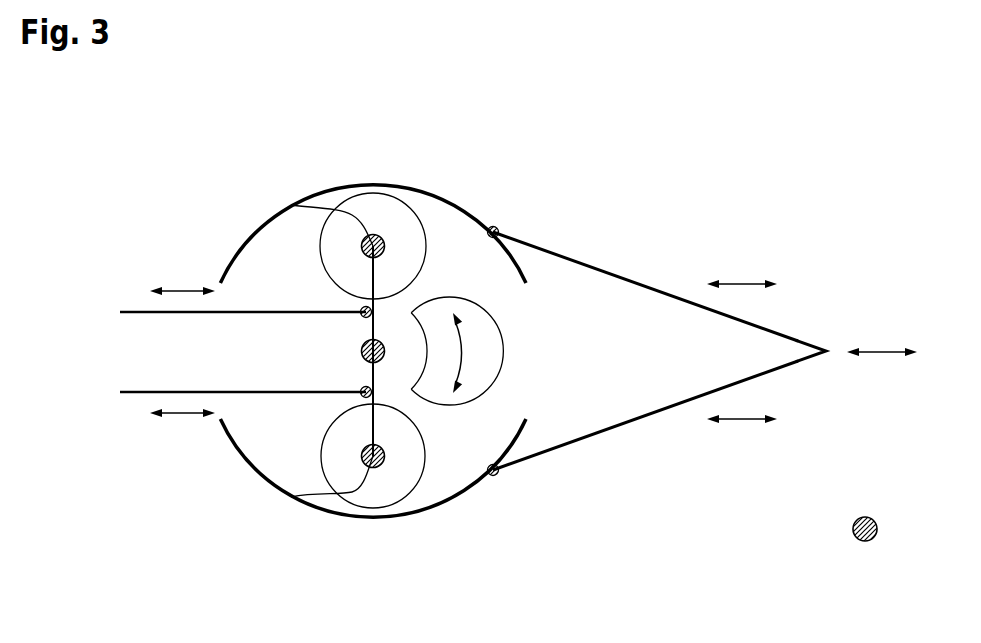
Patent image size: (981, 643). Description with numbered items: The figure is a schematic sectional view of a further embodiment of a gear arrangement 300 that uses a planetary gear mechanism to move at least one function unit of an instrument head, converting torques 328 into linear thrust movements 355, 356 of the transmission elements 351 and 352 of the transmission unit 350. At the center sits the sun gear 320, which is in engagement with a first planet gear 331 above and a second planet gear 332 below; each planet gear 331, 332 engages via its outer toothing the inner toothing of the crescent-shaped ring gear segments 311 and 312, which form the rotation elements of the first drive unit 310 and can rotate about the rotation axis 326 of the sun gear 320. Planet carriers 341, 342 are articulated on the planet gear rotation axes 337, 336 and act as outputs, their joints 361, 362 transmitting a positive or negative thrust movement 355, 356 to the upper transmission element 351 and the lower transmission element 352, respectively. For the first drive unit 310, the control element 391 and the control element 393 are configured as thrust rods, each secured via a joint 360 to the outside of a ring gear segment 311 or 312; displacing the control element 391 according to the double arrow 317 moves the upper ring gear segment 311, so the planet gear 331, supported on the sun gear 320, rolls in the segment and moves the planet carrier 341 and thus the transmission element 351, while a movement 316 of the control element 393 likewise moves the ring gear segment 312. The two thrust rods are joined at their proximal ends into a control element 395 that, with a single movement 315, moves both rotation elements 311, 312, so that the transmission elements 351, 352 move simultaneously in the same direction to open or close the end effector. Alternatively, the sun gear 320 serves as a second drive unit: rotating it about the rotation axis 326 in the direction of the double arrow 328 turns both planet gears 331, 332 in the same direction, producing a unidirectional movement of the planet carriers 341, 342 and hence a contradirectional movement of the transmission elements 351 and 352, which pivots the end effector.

The gear arrangement 300 is at (598, 115).
The first drive unit 310 is at (230, 192).
The first ring gear segment 311 is at (365, 168).
The second ring gear segment 312 is at (362, 537).
The single movement 315 is at (883, 355).
The movement of control element 316 is at (742, 422).
The double arrow 317 is at (746, 281).
The sun gear 320 is at (410, 308).
The rotation axis 326 is at (412, 390).
The double arrow 328 is at (463, 353).
The first planet gear 331 is at (407, 205).
The second planet gear 332 is at (411, 493).
The planet gear rotation axis 336 is at (291, 498).
The planet gear rotation axis 337 is at (291, 204).
The planet carrier 341 is at (366, 276).
The planet carrier 342 is at (352, 432).
The transmission unit 350 is at (142, 323).
The first transmission element 351 is at (133, 309).
The second transmission element 352 is at (133, 395).
The linear thrust movement 355 is at (184, 288).
The linear thrust movement 356 is at (181, 417).
The joint 360 is at (494, 226).
The joint 361 is at (361, 318).
The joint 362 is at (360, 388).
The control element 391 is at (654, 283).
The control element 393 is at (654, 415).
The control element 395 is at (762, 364).